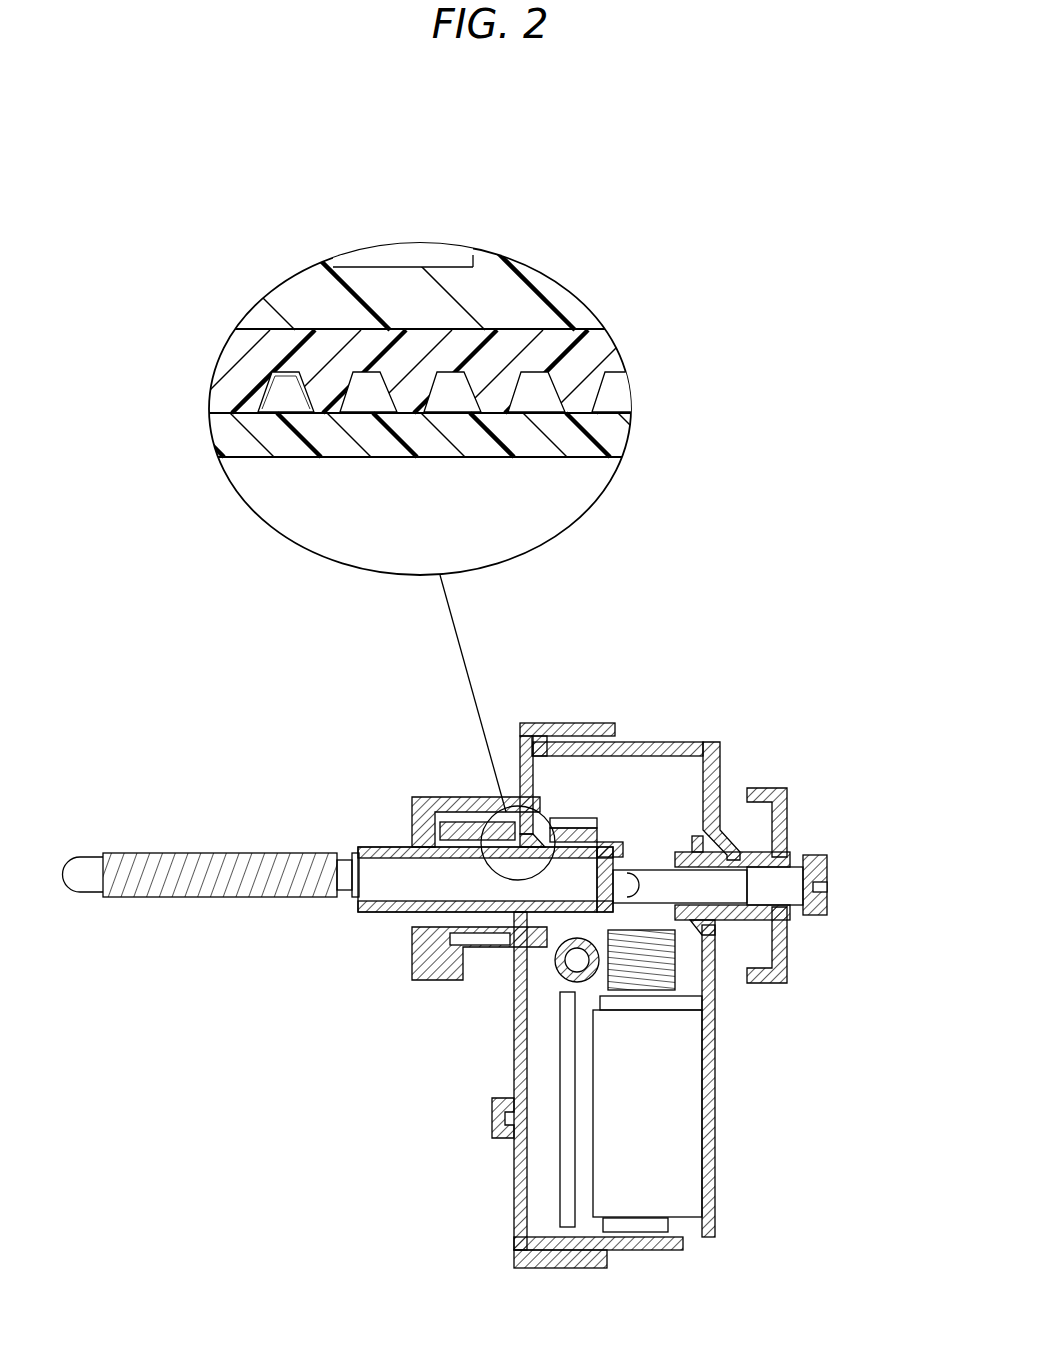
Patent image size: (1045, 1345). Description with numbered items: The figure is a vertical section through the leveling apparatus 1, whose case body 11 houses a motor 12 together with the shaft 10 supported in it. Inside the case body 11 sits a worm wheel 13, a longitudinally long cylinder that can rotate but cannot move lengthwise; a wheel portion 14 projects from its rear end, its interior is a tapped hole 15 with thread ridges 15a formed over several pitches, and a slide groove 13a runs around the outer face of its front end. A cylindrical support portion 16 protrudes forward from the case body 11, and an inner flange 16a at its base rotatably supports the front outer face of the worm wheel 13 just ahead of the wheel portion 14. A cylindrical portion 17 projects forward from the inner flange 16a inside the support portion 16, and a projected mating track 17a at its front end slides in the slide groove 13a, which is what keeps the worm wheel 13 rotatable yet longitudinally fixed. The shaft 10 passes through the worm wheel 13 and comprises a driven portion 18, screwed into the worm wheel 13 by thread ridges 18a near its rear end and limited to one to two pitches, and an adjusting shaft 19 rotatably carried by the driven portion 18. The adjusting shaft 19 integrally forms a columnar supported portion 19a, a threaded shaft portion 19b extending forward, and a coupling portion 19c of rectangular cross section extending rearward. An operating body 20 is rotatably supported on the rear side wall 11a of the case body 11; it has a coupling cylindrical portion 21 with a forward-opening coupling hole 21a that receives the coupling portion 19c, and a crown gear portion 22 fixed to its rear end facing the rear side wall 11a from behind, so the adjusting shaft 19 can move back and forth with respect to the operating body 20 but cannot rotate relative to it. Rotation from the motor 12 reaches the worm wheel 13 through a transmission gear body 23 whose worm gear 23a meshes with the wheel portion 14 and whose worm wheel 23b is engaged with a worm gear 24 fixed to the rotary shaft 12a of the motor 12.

The leveling apparatus 1 is at (580, 690).
The shaft 10 is at (363, 701).
The case body 11 is at (648, 748).
The rear side wall 11a is at (715, 1085).
The motor 12 is at (700, 1170).
The rotary shaft 12a is at (635, 1000).
The worm wheel 13 is at (563, 337).
The slide groove 13a is at (460, 828).
The wheel portion 14 is at (618, 845).
The tapped hole 15 is at (600, 838).
The thread ridges 15a is at (618, 430).
The support portion 16 is at (423, 970).
The inner flange 16a is at (467, 257).
The cylindrical portion 17 is at (383, 270).
The projected mating track 17a is at (398, 905).
The driven portion 18 is at (270, 437).
The thread ridges 18a is at (278, 376).
The adjusting shaft 19 is at (211, 867).
The supported portion 19a is at (382, 848).
The threaded shaft portion 19b is at (188, 892).
The coupling portion 19c is at (795, 870).
The operating body 20 is at (822, 915).
The coupling cylindrical portion 21 is at (732, 835).
The coupling hole 21a is at (790, 930).
The crown gear portion 22 is at (775, 795).
The transmission gear body 23 is at (583, 993).
The worm gear 23a is at (600, 1010).
The worm wheel 23b is at (542, 968).
The worm gear 24 is at (676, 990).